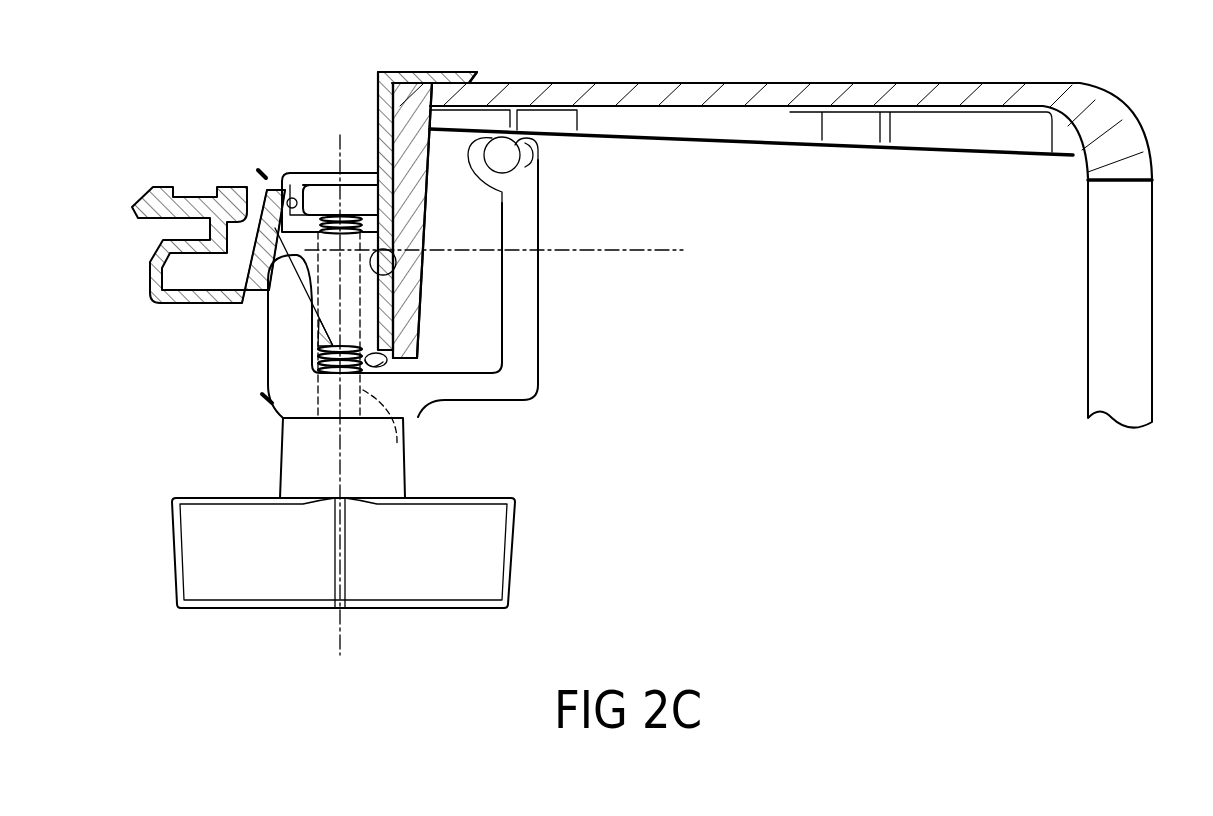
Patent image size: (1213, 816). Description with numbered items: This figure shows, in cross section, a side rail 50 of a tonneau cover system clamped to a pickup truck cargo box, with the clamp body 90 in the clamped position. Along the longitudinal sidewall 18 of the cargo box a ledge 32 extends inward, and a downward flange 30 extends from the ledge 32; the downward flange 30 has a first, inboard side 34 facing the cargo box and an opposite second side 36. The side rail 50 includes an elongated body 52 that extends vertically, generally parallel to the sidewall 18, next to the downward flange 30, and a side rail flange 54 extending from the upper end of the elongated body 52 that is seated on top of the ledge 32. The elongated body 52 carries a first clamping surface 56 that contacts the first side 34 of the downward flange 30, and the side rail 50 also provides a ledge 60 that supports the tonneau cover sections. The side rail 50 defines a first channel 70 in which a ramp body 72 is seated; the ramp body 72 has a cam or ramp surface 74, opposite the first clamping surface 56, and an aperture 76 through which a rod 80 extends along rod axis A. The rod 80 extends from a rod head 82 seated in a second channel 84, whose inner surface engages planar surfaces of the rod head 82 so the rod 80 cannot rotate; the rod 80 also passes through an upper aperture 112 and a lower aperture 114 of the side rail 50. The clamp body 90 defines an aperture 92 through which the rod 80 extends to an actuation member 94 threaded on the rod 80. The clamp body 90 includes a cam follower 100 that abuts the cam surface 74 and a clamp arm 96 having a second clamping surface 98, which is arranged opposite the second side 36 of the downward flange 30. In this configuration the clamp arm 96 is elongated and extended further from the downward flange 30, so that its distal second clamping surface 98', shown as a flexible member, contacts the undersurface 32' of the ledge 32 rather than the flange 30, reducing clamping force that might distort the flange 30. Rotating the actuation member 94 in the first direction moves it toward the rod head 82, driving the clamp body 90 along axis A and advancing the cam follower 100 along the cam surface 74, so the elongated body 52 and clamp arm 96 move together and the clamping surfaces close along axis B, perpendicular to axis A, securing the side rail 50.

The longitudinal sidewall 18 is at (1140, 300).
The downward flange 30 is at (415, 213).
The ledge 32 is at (772, 105).
The undersurface of the ledge 32' is at (751, 151).
The first side 34 is at (407, 98).
The second side 36 is at (428, 185).
The side rail 50 is at (260, 172).
The elongated body 52 is at (378, 98).
The side rail flange 54 is at (412, 72).
The first clamping surface 56 is at (380, 125).
The ledge of the side rail 60 is at (143, 190).
The first channel 70 is at (372, 290).
The ramp body 72 is at (374, 303).
The cam or ramp surface 74 is at (323, 327).
The aperture 76 is at (417, 358).
The rod 80 is at (327, 357).
The rod head 82 is at (330, 200).
The second channel 84 is at (290, 200).
The clamp body 90 is at (264, 402).
The aperture 92 is at (398, 444).
The actuation member 94 is at (487, 553).
The clamp arm 96 is at (525, 310).
The second clamping surface 98 is at (431, 264).
The second clamping surface 98' is at (536, 170).
The cam follower 100 is at (315, 308).
The upper aperture 112 is at (297, 173).
The lower aperture 114 is at (383, 362).
The rod axis A is at (340, 135).
The axis B is at (638, 248).